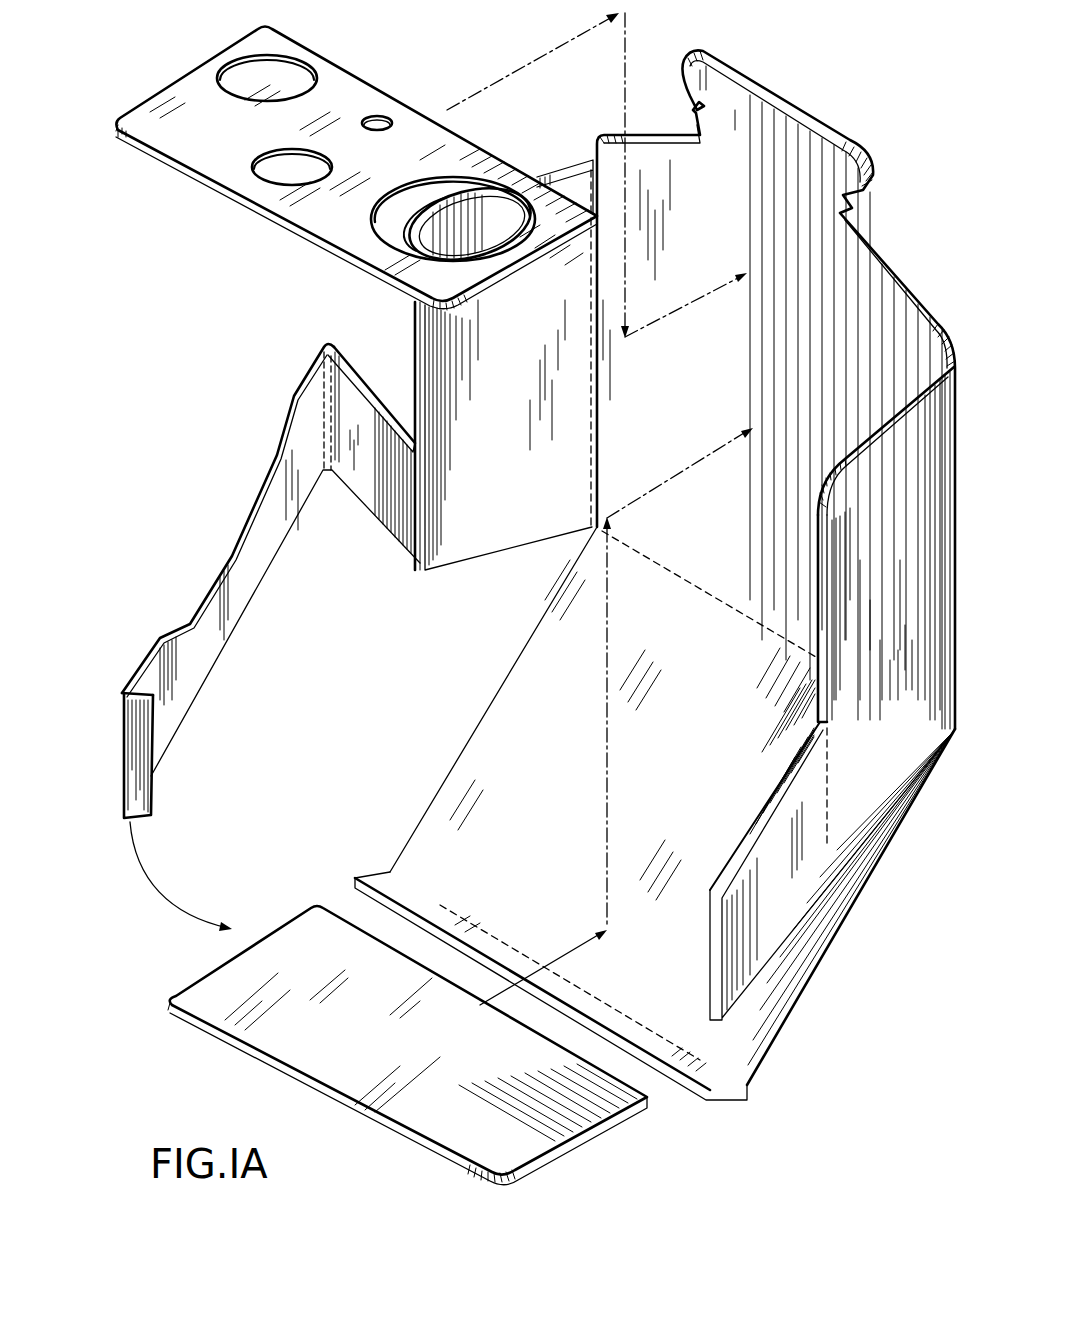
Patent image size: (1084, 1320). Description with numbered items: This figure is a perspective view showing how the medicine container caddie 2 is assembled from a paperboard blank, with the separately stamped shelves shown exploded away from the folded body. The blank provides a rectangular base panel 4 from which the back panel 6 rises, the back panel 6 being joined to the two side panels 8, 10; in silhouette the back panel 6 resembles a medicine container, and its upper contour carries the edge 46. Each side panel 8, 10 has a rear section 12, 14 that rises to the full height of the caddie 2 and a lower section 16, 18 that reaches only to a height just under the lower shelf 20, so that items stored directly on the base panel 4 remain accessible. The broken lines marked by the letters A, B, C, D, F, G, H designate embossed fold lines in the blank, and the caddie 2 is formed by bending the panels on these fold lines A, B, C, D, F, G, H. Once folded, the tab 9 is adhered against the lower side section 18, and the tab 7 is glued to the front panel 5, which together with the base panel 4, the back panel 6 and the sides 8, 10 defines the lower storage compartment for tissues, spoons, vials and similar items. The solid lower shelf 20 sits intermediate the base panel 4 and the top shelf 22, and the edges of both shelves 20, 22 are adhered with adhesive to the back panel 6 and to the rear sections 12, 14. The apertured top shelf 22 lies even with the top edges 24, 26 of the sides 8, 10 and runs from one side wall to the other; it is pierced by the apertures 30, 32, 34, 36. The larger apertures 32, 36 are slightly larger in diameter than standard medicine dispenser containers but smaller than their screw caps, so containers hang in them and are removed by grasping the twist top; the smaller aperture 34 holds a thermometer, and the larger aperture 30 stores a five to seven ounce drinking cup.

The medicine container caddie 2 is at (795, 46).
The base panel 4 is at (440, 790).
The front panel 5 is at (252, 597).
The back panel 6 is at (713, 401).
The tab 7 is at (383, 877).
The side panel 8 is at (416, 327).
The tab 9 is at (156, 798).
The side panel 10 is at (903, 615).
The rear section of side panel 12 is at (536, 302).
The rear section of side panel 14 is at (908, 483).
The lower section of side panel 16 is at (348, 383).
The lower section of side panel 18 is at (740, 977).
The lower shelf 20 is at (288, 943).
The top shelf 22 is at (217, 172).
The top edge of side panel 24 is at (422, 232).
The top edge of side panel 26 is at (815, 521).
The aperture 30 is at (390, 247).
The aperture 32 is at (258, 161).
The aperture 34 is at (387, 120).
The aperture 36 is at (286, 60).
The rear panel top edge 46 is at (783, 105).
The fold line A is at (122, 693).
The fold line B is at (310, 368).
The fold line C is at (407, 560).
The fold line D is at (584, 183).
The fold line F is at (825, 800).
The fold line G is at (755, 620).
The fold line H is at (512, 937).